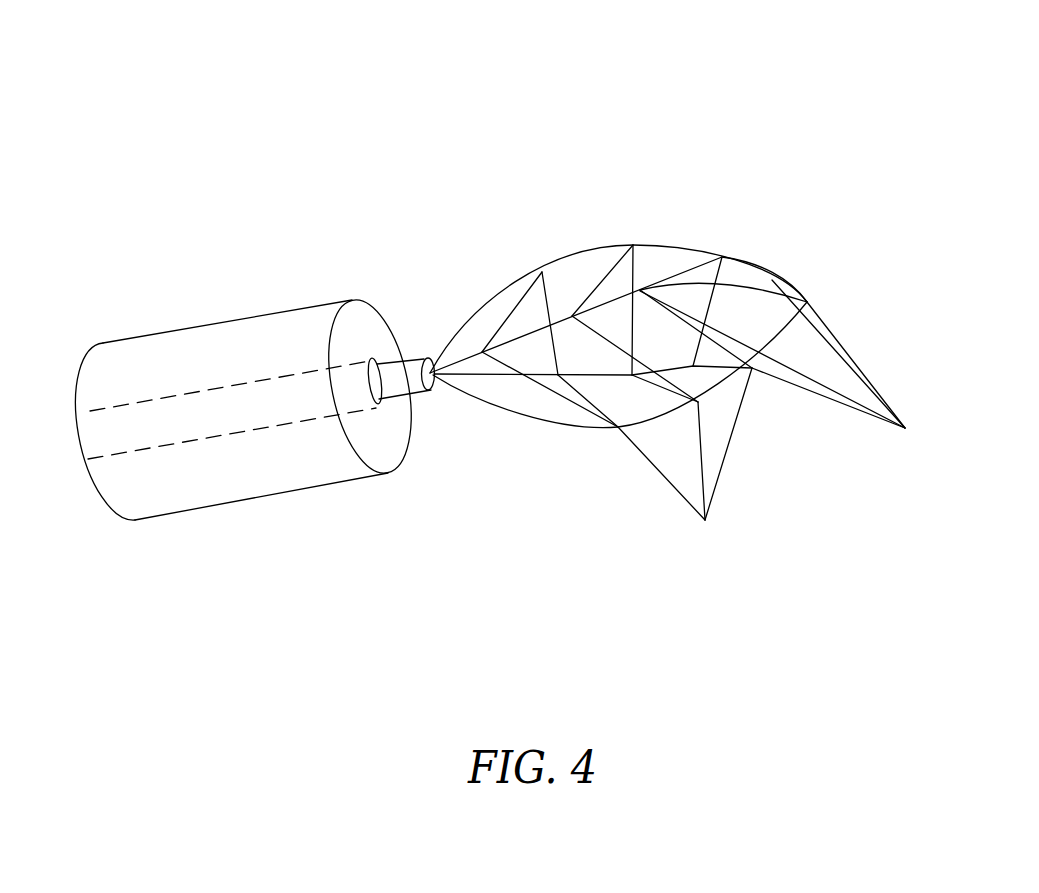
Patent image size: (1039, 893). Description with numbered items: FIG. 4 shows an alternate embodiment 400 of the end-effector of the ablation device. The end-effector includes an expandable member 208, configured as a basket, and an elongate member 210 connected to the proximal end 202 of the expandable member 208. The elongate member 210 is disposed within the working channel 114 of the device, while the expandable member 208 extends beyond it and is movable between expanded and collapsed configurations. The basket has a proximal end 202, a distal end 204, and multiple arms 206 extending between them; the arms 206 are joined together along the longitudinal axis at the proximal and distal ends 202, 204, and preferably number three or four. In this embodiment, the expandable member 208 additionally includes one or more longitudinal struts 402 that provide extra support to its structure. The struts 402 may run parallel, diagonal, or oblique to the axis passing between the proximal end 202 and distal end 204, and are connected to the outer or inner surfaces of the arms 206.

The wind energy system 400 is at (96, 131).
The working channel 114 is at (300, 420).
The proximal end 202 is at (428, 357).
The distal end 204 is at (807, 302).
The arms 206 is at (905, 428).
The expandable member 208 is at (585, 253).
The elongate member 210 is at (433, 391).
The longitudinal struts 402 is at (705, 520).